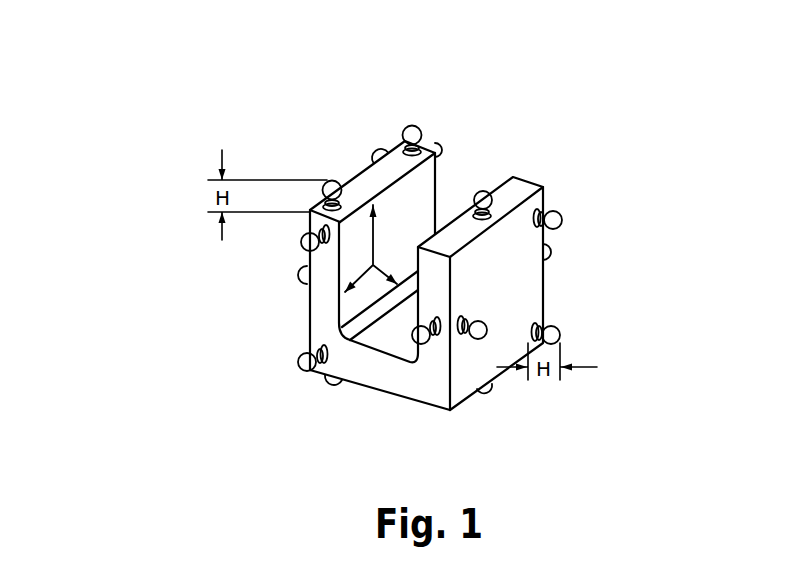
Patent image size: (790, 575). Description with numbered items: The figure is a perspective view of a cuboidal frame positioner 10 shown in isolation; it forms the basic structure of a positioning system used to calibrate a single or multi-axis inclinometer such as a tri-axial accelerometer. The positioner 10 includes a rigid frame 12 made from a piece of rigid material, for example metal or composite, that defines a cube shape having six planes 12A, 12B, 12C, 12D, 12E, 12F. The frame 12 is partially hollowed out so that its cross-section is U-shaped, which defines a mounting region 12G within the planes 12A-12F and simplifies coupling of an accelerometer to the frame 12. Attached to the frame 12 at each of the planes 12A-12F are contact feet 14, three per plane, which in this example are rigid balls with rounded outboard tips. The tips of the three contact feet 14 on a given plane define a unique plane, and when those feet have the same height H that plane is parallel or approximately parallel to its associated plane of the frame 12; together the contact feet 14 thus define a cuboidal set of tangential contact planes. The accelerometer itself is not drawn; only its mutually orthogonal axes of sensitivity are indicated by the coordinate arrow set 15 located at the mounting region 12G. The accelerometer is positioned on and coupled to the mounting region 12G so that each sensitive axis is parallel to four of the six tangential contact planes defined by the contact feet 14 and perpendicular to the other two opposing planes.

The cuboidal frame positioner 10 is at (160, 73).
The rigid frame 12 is at (547, 273).
The plane 12A is at (438, 397).
The plane 12B is at (513, 275).
The plane 12C is at (437, 190).
The plane 12D is at (307, 305).
The plane 12E is at (513, 178).
The plane 12F is at (395, 395).
The mounting region 12G is at (390, 345).
The contact feet 14 is at (380, 153).
The coordinate arrow set 15 is at (373, 265).